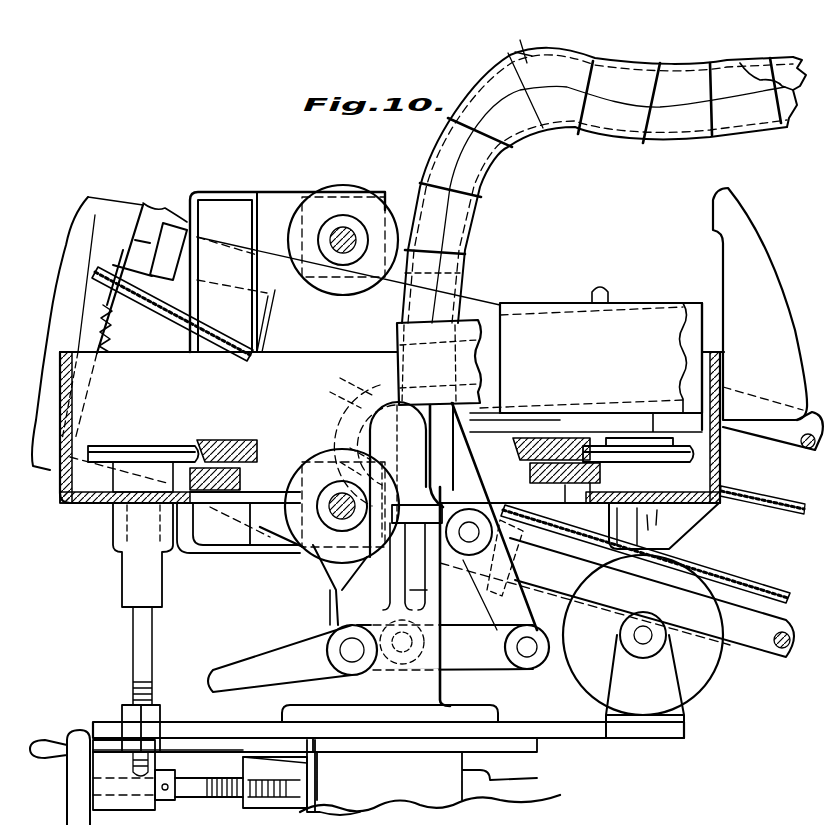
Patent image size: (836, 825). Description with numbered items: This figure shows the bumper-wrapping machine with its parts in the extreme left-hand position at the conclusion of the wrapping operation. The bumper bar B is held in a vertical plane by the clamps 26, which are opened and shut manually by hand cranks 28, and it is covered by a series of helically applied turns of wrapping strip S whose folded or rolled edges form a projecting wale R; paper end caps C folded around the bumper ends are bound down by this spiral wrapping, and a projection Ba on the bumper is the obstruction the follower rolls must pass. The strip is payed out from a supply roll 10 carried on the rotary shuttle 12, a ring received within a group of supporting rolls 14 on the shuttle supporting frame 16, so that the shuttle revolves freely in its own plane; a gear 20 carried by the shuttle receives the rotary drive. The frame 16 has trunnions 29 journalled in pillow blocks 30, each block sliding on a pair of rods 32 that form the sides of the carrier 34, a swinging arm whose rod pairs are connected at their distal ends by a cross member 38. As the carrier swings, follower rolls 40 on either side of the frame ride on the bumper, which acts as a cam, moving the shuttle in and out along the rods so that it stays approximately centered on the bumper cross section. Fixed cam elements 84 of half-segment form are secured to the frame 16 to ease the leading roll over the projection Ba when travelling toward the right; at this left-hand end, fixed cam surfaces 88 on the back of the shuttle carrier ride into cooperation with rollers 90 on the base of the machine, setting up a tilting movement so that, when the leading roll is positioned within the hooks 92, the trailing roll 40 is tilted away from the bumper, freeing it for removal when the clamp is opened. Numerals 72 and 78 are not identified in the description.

The supply roll 10 is at (556, 325).
The rotary shuttle 12 is at (236, 445).
The supporting rolls 14 is at (152, 452).
The shuttle supporting frame 16 is at (722, 455).
The gear 20 is at (563, 488).
The clamps 26 is at (517, 533).
The hand cranks 28 is at (273, 678).
The trunnions 29 is at (349, 436).
The pillow blocks 30 is at (297, 287).
The rods 32 is at (225, 277).
The carrier 34 is at (147, 248).
The cross member 38 is at (93, 213).
The follower rolls 40 is at (328, 485).
The chain 72 is at (147, 305).
The spring 78 is at (113, 337).
The cam elements 84 is at (761, 253).
The cam surfaces 88 is at (679, 527).
The rollers 90 is at (699, 673).
The hooks 92 is at (320, 562).
The bumper bar B is at (778, 68).
The projection Ba is at (512, 42).
The wale R is at (650, 68).
The wrapping strip S is at (693, 85).
The end caps C is at (381, 503).